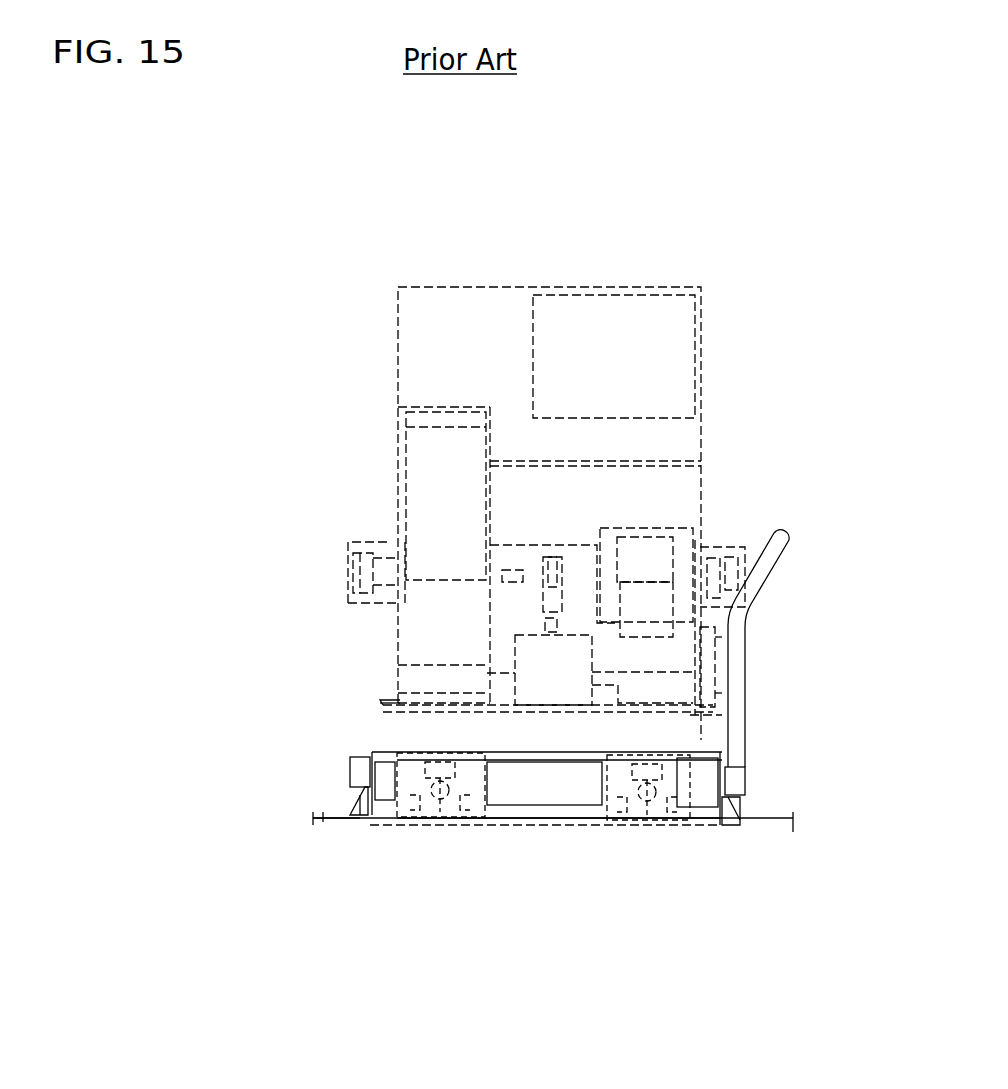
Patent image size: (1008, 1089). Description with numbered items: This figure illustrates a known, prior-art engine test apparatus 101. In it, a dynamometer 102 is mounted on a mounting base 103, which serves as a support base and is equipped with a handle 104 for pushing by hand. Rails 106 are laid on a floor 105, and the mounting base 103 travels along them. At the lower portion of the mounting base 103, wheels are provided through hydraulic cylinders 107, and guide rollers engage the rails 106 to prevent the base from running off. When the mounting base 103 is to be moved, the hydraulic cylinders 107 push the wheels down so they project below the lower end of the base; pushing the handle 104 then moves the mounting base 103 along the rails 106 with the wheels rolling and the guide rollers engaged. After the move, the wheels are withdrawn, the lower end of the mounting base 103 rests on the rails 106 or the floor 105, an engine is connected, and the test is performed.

The engine test apparatus 101 is at (348, 258).
The dynamometer 102 is at (398, 383).
The mounting base 103 is at (377, 752).
The handle 104 is at (762, 582).
The floor 105 is at (322, 815).
The rails 106 is at (328, 818).
The hydraulic cylinders 107 is at (423, 760).